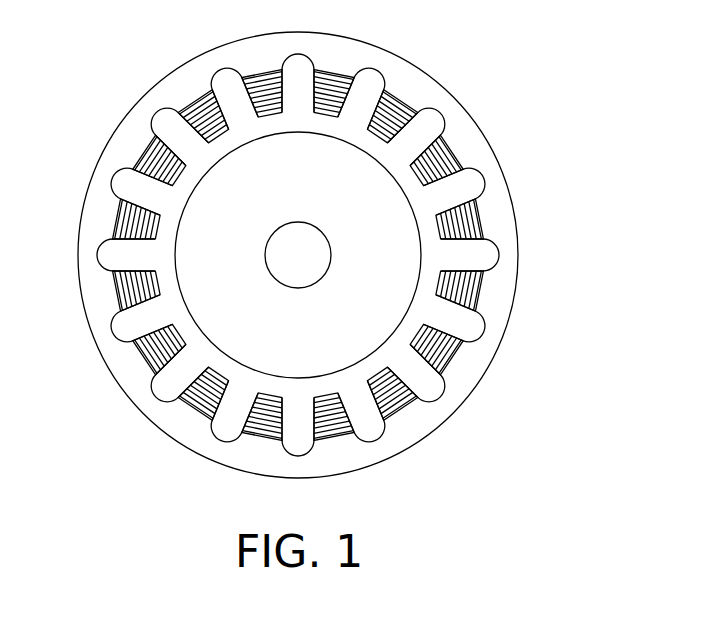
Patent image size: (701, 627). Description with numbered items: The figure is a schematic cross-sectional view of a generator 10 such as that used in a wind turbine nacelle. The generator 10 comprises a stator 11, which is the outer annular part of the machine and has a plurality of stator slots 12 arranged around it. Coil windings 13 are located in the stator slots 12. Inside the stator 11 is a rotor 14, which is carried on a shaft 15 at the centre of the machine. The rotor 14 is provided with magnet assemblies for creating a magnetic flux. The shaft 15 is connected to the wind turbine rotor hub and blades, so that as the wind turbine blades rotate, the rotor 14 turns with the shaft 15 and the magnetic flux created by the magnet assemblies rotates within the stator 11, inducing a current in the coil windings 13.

The generator 10 is at (512, 94).
The stator 11 is at (329, 285).
The stator slots 12 is at (433, 118).
The coil windings 13 is at (398, 410).
The rotor 14 is at (195, 273).
The shaft 15 is at (287, 245).